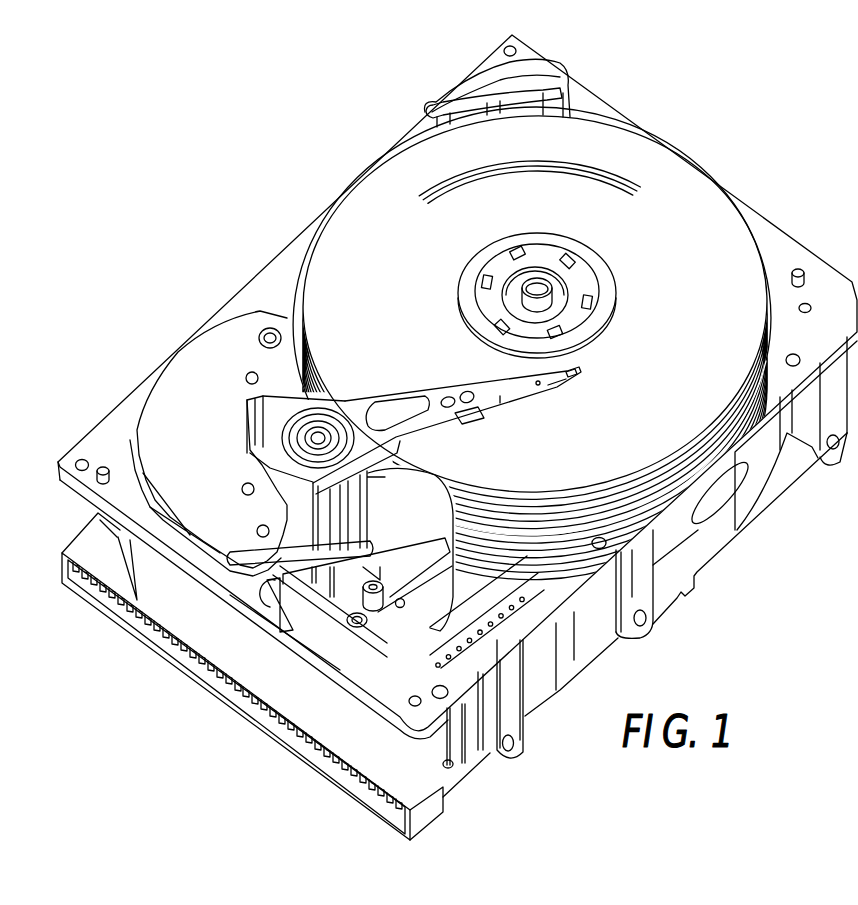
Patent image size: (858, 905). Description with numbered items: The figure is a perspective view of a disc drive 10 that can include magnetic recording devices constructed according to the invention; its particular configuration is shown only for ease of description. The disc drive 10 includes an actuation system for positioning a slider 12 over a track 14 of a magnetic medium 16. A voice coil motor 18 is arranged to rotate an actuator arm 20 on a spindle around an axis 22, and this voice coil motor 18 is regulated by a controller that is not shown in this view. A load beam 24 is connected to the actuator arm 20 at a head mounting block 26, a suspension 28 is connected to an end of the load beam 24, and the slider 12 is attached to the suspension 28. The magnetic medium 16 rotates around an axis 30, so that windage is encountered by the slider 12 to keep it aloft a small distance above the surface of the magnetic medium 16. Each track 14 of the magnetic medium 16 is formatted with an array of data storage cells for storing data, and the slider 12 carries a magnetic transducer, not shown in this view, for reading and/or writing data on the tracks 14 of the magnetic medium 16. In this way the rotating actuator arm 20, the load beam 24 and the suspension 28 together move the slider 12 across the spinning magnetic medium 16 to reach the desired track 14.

The disc drive 10 is at (750, 178).
The slider 12 is at (577, 376).
The track 14 is at (546, 168).
The magnetic medium 16 is at (730, 270).
The voice coil motor 18 is at (186, 384).
The actuator arm 20 is at (357, 400).
The axis 22 is at (272, 393).
The load beam 24 is at (513, 392).
The head mounting block 26 is at (463, 409).
The suspension 28 is at (560, 380).
The axis 30 is at (533, 288).